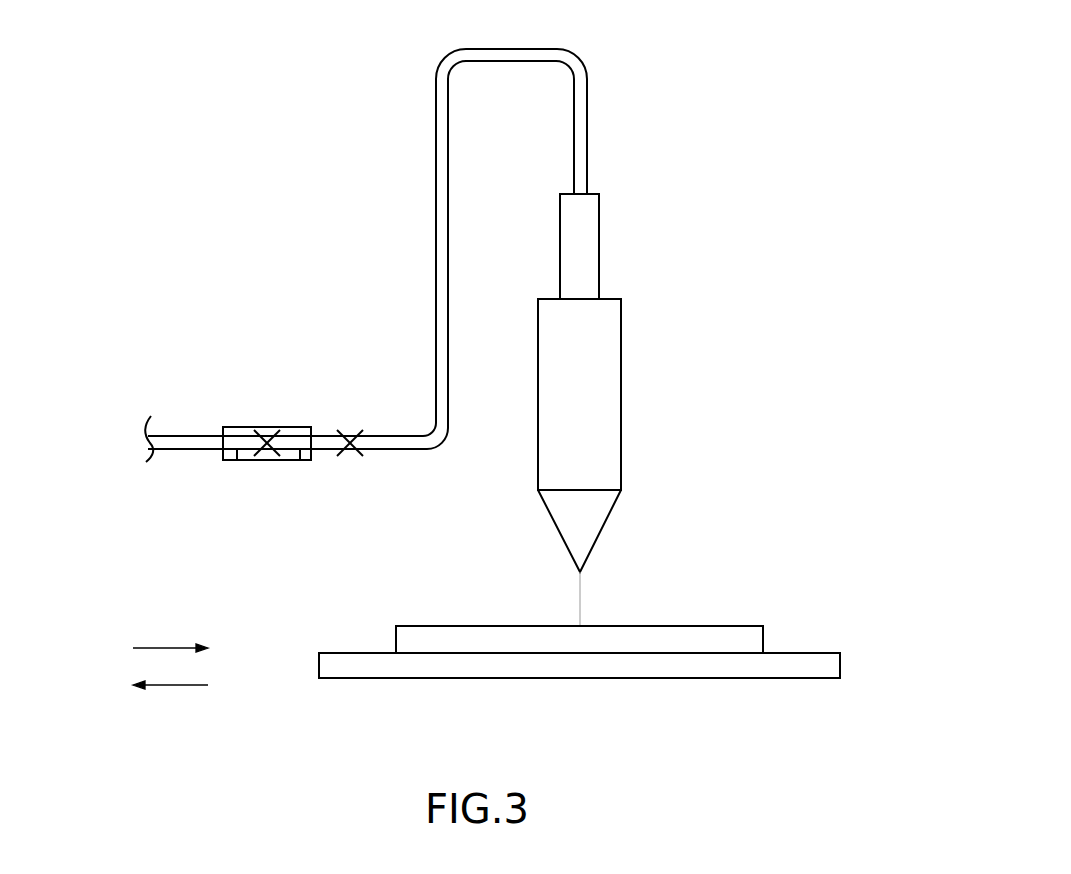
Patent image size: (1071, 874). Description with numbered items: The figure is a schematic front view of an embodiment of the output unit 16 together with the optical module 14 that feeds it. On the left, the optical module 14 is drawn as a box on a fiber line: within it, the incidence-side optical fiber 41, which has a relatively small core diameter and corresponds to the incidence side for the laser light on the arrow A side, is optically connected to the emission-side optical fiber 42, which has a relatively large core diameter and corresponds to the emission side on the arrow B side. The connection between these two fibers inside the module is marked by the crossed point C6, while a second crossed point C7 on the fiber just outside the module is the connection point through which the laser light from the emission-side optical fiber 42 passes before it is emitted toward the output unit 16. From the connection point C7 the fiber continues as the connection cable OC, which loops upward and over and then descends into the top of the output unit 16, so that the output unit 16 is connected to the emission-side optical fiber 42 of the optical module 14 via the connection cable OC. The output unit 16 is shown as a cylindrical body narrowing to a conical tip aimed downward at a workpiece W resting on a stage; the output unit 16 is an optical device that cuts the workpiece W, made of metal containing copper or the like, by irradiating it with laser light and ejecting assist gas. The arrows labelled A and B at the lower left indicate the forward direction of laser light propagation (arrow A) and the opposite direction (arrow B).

The connection cable OC is at (437, 150).
The optical module 14 is at (273, 399).
The incidence-side optical fiber 41 is at (237, 451).
The emission-side optical fiber 42 is at (300, 457).
The sixth connection point C6 is at (267, 447).
The connection point C7 is at (350, 450).
The output unit 16 is at (637, 282).
The workpiece W is at (725, 639).
The arrow A is at (165, 648).
The arrow B is at (170, 685).